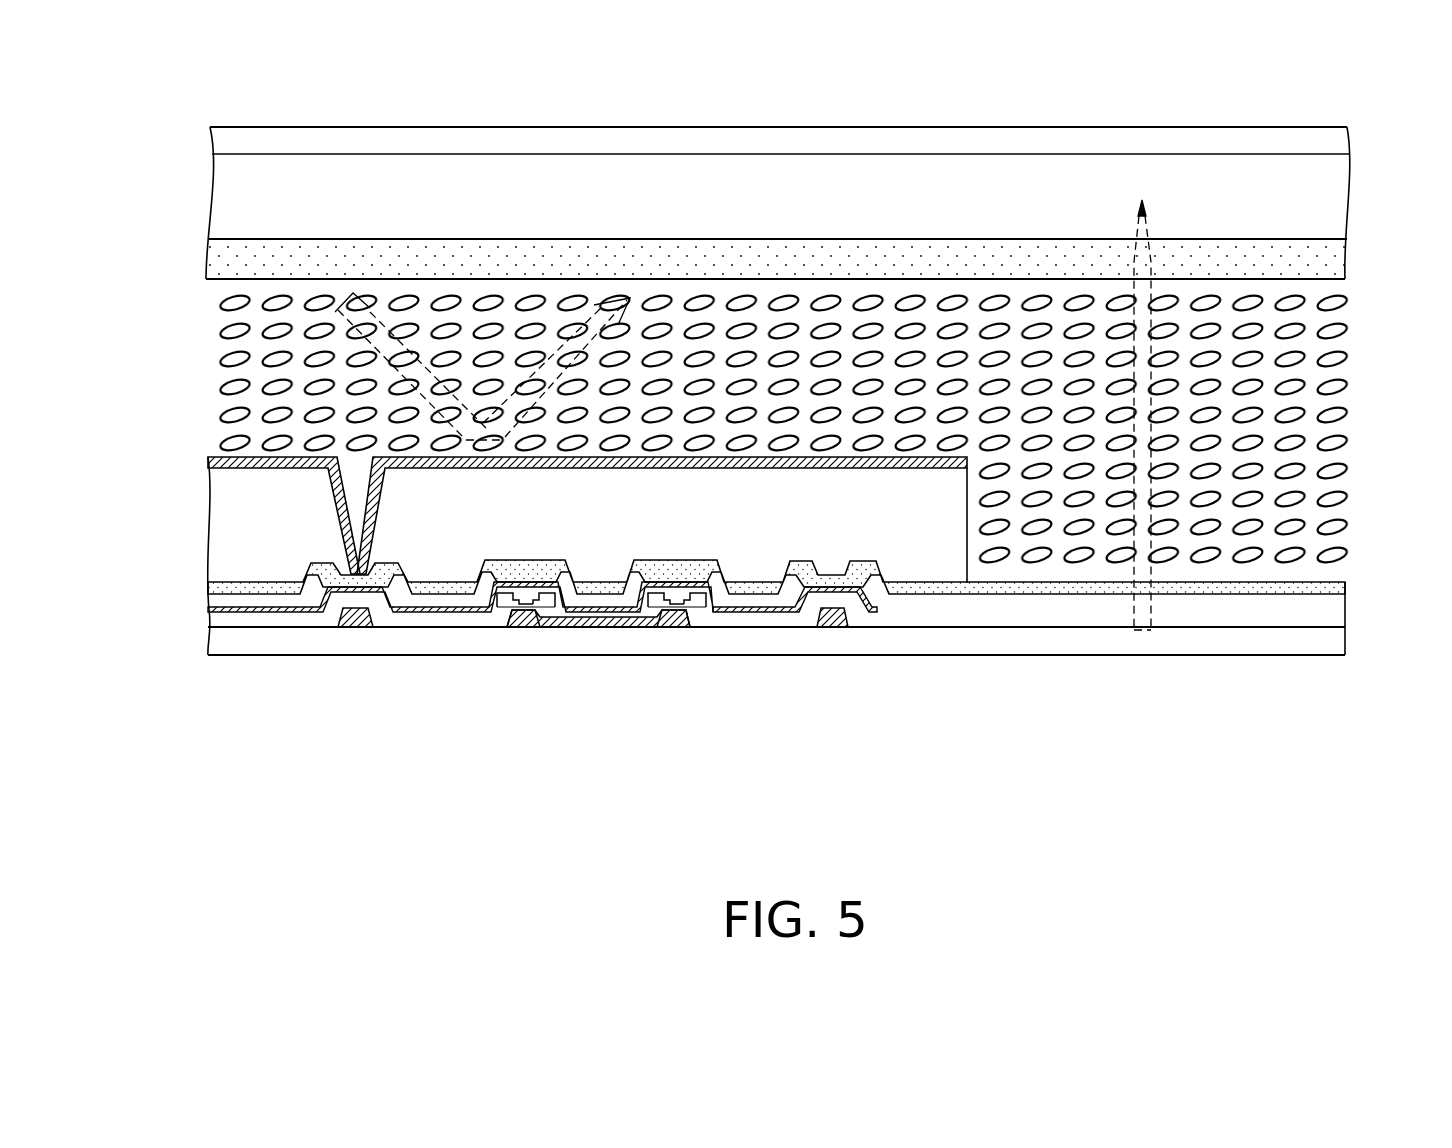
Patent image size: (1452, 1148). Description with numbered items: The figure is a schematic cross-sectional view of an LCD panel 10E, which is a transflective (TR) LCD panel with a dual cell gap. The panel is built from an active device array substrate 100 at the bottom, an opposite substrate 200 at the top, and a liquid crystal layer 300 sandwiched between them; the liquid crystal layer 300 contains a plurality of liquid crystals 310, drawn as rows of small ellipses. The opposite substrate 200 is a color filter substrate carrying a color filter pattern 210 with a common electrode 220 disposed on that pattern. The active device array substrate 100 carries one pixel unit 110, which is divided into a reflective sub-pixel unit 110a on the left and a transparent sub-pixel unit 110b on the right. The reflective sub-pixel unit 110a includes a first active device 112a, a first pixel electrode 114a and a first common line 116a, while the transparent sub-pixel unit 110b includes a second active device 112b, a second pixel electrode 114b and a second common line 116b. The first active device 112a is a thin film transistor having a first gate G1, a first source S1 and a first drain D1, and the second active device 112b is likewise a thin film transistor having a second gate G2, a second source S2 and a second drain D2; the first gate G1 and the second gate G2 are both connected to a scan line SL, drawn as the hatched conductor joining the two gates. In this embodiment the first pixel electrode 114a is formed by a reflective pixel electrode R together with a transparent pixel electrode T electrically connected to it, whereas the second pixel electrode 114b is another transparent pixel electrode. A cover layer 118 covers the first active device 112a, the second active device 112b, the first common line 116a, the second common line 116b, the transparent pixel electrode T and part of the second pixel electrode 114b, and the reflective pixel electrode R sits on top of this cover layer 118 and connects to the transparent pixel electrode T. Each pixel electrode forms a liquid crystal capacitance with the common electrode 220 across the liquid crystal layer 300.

The LCD panel 10E is at (1345, 839).
The active device array substrate 100 is at (1387, 582).
The opposite substrate 200 is at (821, 175).
The color filter pattern 210 is at (877, 188).
The common electrode 220 is at (973, 253).
The liquid crystal layer 300 is at (780, 415).
The liquid crystals 310 is at (233, 302).
The pixel unit 110 is at (776, 661).
The reflective sub-pixel unit 110a is at (587, 636).
The transparent sub-pixel unit 110b is at (754, 702).
The first active device 112a is at (538, 679).
The second active device 112b is at (689, 680).
The first pixel electrode 114a is at (587, 611).
The second pixel electrode 114b is at (768, 588).
The first common line 116a is at (352, 622).
The second common line 116b is at (842, 688).
The cover layer 118 is at (253, 560).
The scan line SL is at (606, 622).
The transparent pixel electrode T is at (422, 590).
The reflective pixel electrode R is at (455, 463).
The first drain D1 is at (517, 606).
The first gate G1 is at (524, 620).
The first source S1 is at (536, 608).
The second drain D2 is at (692, 610).
The second gate G2 is at (677, 622).
The second source S2 is at (663, 606).